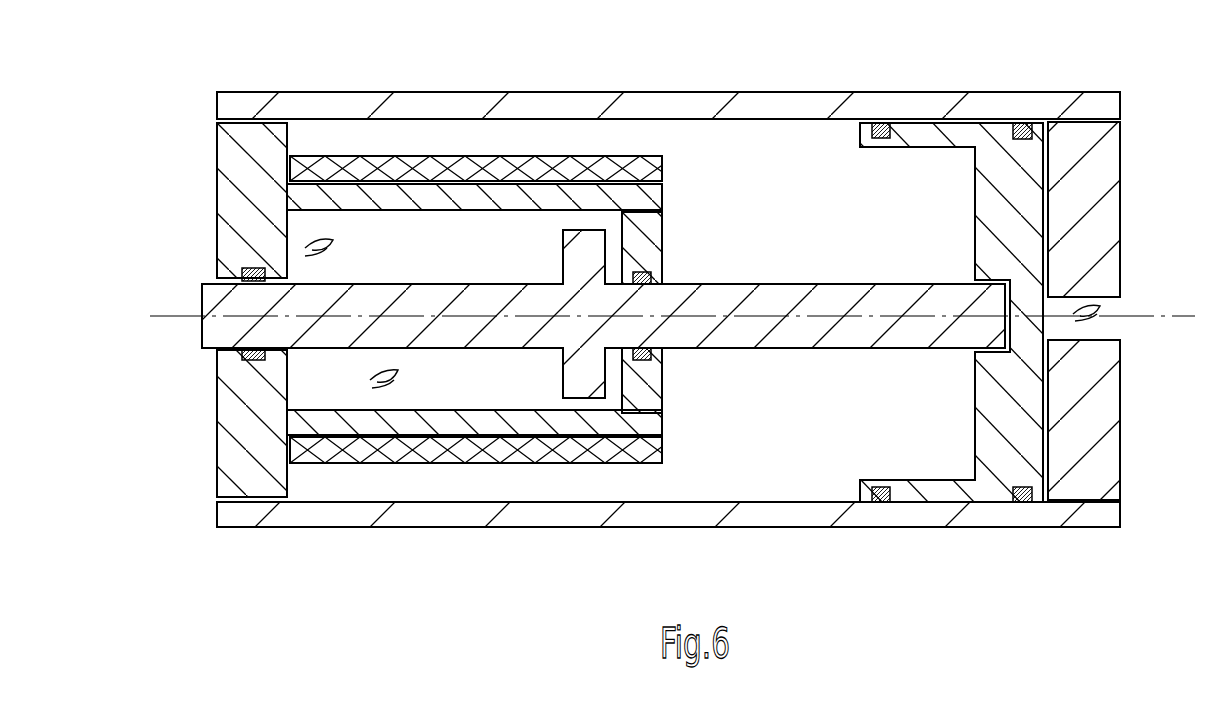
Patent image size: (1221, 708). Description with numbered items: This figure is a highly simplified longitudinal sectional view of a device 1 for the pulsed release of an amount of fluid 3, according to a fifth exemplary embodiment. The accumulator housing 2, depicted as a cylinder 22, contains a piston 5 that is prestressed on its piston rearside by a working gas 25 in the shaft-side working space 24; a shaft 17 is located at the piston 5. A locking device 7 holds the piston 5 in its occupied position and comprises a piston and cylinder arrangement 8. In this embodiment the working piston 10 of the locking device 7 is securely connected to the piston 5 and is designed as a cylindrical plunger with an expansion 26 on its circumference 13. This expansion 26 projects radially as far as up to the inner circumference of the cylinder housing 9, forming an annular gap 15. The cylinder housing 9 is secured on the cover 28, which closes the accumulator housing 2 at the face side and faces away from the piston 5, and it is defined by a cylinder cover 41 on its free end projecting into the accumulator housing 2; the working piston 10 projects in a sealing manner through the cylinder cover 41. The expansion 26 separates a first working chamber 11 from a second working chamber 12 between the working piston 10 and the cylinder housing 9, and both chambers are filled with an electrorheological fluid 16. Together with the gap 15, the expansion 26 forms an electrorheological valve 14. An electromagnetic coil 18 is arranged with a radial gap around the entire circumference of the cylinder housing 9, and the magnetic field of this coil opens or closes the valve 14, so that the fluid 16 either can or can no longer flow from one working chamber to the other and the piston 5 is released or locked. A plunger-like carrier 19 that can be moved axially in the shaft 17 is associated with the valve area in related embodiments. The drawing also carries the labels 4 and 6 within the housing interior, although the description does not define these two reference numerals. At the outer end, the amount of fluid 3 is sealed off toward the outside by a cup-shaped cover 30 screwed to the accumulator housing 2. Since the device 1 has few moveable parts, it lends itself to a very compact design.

The device 1 is at (910, 73).
The accumulator housing 2 is at (723, 88).
The cylinder 22 is at (812, 99).
The amount of fluid 3 is at (1098, 296).
The working chamber 4 is at (733, 184).
The piston 5 is at (1030, 202).
The annular chamber 6 is at (433, 485).
The locking device 7 is at (601, 479).
The piston and cylinder arrangement 8 is at (668, 260).
The cylinder housing 9 is at (468, 188).
The working piston 10 is at (578, 265).
The first working chamber 11 is at (612, 247).
The second working chamber 12 is at (325, 225).
The circumference 13 is at (878, 297).
The electrorheological valve 14 is at (553, 419).
The gap 15 is at (590, 405).
The electrorheological fluid 16 is at (333, 240).
The shaft 17 is at (958, 492).
The electromagnetic coil 18 is at (638, 452).
The plunger-like carrier 19 is at (522, 200).
The shaft-side working space 24 is at (837, 216).
The working gas 25 is at (778, 473).
The expansion 26 is at (612, 377).
The cover 28 is at (240, 196).
The cover 30 is at (1110, 383).
The cylinder cover 41 is at (652, 230).